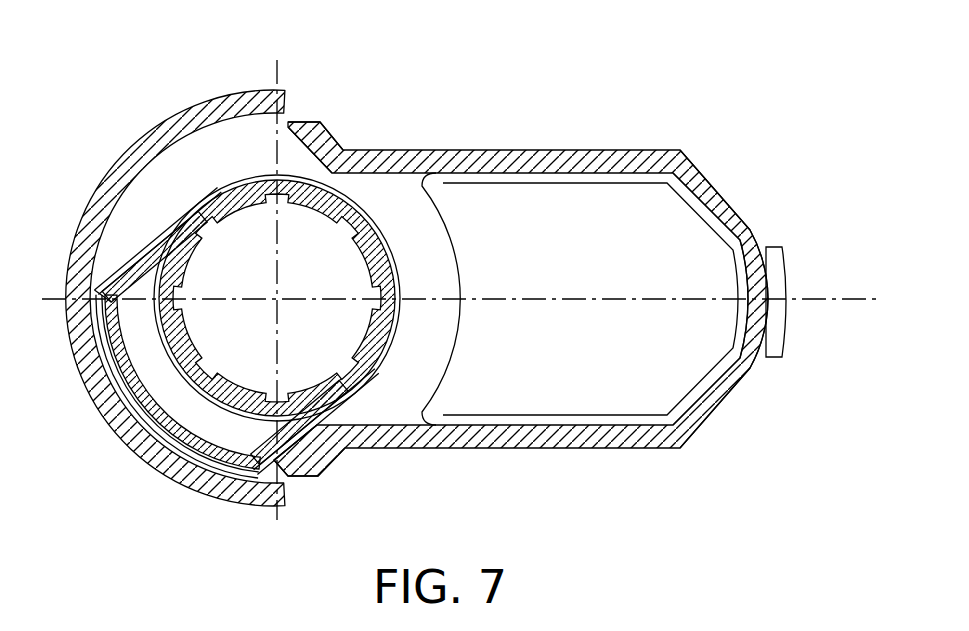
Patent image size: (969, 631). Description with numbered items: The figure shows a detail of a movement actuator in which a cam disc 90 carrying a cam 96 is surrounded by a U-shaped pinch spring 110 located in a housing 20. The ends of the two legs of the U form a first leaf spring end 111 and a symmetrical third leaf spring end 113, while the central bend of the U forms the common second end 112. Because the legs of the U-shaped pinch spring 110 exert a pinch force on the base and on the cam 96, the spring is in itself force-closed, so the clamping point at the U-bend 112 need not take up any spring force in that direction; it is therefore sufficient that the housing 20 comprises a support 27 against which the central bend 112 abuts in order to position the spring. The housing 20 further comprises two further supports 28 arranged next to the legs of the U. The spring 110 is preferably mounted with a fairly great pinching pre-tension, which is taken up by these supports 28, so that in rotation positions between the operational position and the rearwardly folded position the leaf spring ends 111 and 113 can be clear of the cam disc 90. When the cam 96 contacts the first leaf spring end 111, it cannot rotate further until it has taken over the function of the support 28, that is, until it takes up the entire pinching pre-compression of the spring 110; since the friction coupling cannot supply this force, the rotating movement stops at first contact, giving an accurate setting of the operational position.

The housing 20 is at (140, 457).
The support 27 is at (790, 275).
The further supports 28 is at (442, 172).
The cam disc 90 is at (178, 212).
The cam 96 is at (108, 395).
The U-shaped pinch spring 110 is at (558, 448).
The first leaf spring end 111 is at (345, 460).
The second end 112 is at (733, 407).
The third leaf spring end 113 is at (377, 117).